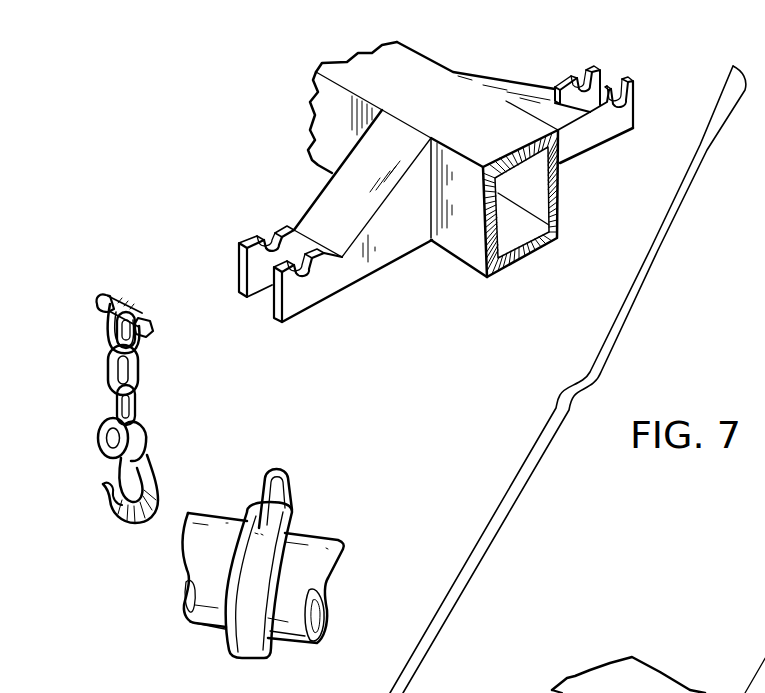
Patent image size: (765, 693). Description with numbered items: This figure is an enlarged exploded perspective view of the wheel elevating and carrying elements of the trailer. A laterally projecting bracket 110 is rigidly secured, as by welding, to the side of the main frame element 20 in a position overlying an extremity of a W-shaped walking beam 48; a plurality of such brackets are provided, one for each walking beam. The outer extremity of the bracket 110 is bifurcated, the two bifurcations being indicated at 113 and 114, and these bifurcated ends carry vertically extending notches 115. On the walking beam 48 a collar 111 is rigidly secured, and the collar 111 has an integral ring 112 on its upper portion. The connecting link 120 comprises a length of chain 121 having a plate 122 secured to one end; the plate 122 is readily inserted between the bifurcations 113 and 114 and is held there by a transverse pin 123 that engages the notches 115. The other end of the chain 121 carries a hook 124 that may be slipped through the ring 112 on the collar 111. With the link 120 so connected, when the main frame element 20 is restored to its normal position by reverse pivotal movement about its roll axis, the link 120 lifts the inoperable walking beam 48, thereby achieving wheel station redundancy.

The main frame element 20 is at (560, 208).
The walking beam 48 is at (322, 580).
The bracket 110 is at (508, 80).
The collar 111 is at (297, 515).
The ring 112 is at (277, 467).
The bifurcation 113 is at (243, 296).
The bifurcation 114 is at (297, 298).
The notch 115 is at (322, 268).
The link 120 is at (94, 406).
The chain 121 is at (107, 343).
The plate 122 is at (127, 293).
The transverse pin 123 is at (153, 328).
The hook 124 is at (120, 522).